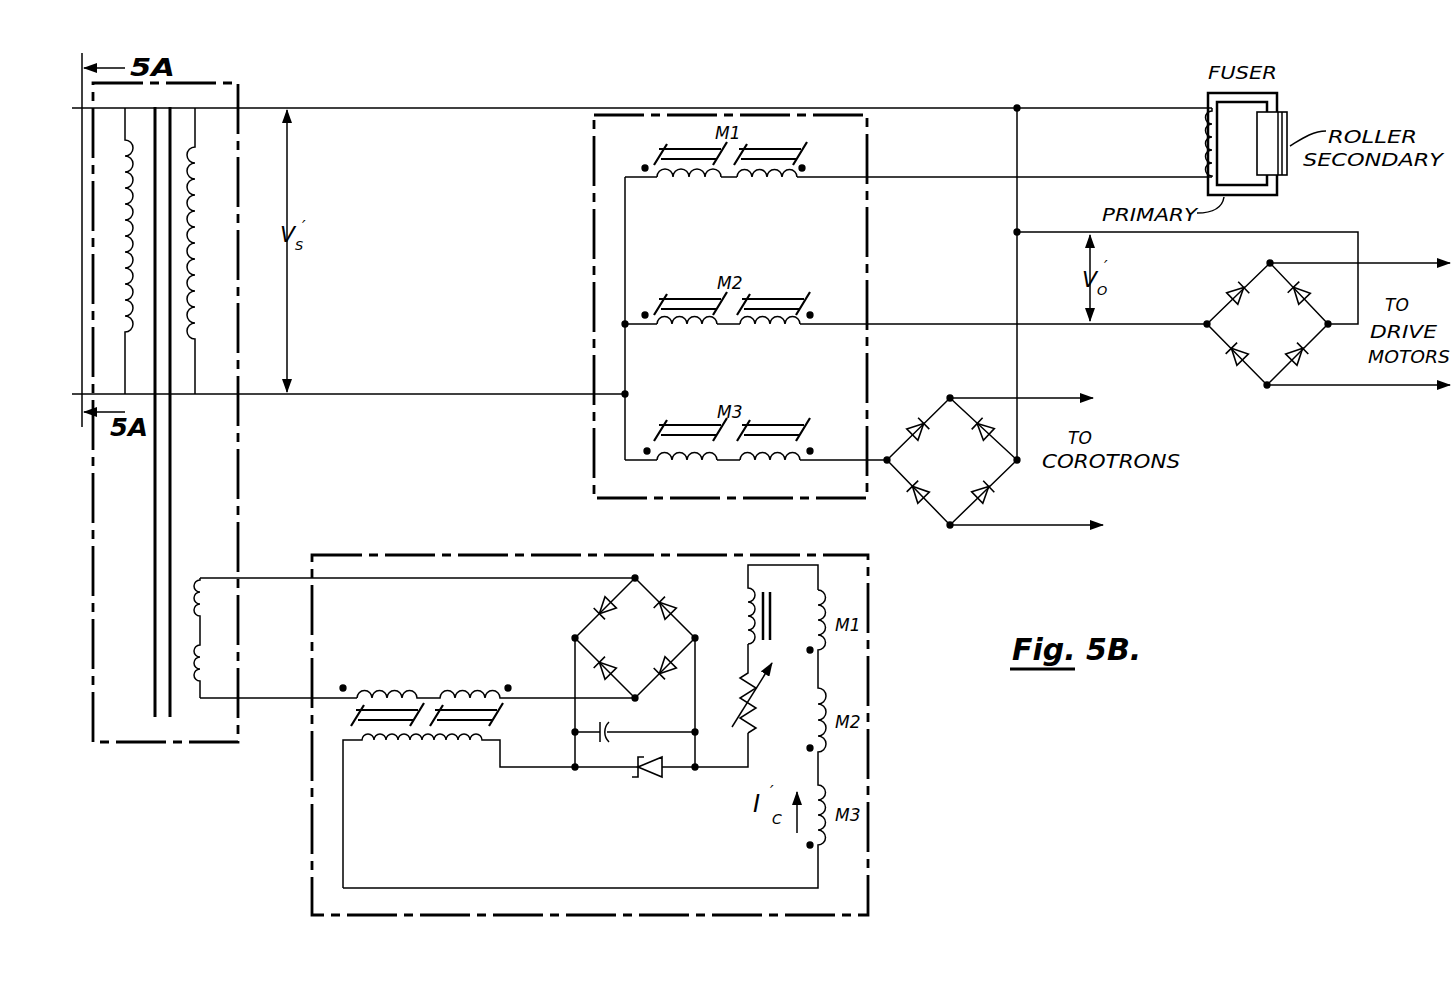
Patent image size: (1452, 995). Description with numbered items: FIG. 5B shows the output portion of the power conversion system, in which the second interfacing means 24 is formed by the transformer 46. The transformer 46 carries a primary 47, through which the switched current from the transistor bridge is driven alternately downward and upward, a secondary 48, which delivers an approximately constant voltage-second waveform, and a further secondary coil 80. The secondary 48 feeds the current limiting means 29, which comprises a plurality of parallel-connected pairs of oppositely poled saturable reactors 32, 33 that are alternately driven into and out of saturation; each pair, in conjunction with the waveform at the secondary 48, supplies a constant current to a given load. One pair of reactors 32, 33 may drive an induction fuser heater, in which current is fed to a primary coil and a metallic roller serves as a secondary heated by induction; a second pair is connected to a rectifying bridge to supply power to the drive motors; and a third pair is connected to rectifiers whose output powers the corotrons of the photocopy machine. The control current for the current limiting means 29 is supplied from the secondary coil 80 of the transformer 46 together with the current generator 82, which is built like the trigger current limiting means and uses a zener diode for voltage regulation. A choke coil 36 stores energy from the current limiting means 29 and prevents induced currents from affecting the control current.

The second interfacing means 24 is at (241, 484).
The transformer 46 is at (170, 458).
The primary winding 47 is at (132, 165).
The secondary winding 48 is at (213, 338).
The secondary coil 80 is at (207, 668).
The current limiting means 29 is at (591, 307).
The saturable reactor 32 is at (672, 181).
The saturable reactor 33 is at (770, 181).
The choke coil 36 is at (777, 613).
The current generator 82 is at (870, 606).